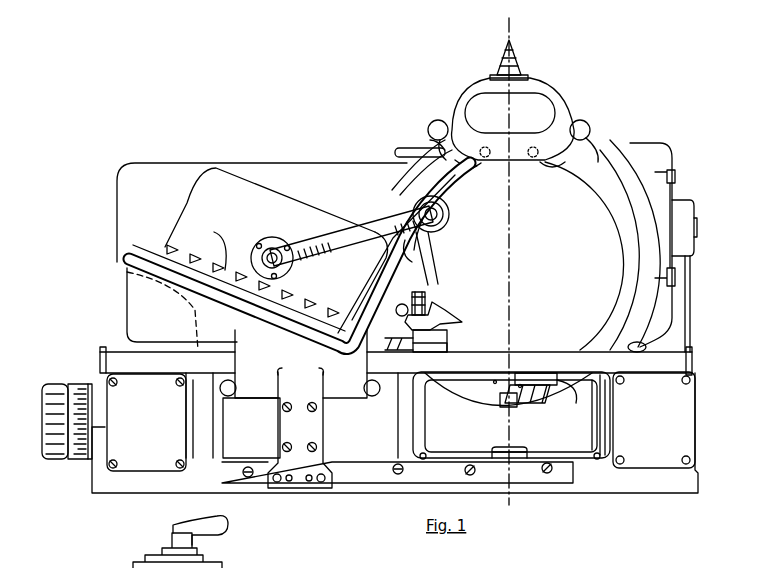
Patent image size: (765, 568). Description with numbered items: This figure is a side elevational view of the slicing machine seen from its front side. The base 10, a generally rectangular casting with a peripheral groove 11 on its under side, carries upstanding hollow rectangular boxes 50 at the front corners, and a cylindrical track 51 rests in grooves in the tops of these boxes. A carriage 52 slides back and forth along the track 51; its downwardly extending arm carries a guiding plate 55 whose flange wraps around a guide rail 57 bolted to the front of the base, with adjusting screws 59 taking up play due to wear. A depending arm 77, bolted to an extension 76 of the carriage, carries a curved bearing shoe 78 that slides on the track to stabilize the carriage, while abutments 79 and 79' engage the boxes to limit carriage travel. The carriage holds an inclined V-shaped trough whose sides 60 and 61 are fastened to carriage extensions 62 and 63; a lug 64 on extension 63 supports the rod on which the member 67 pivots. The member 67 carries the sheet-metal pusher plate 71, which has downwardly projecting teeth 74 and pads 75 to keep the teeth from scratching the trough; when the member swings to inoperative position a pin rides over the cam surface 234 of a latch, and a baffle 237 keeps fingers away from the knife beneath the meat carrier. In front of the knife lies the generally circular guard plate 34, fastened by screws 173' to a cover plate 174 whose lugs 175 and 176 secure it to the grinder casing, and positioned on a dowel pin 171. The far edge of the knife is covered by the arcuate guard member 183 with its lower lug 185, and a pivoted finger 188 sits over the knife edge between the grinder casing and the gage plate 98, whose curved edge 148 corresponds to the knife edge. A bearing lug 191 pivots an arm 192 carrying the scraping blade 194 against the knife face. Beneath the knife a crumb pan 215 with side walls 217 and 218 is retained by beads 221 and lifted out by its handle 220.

The base 10 is at (688, 488).
The peripheral groove 11 is at (509, 13).
The guard plate 34 is at (565, 192).
The hollow rectangular box 50 is at (130, 445).
The track 51 is at (684, 358).
The carriage 52 is at (258, 392).
The guiding plate 55 is at (312, 432).
The guide rail 57 is at (370, 485).
The adjusting screws 59 is at (308, 485).
The trough side 60 is at (137, 263).
The trough side 61 is at (436, 272).
The carriage extension 62 is at (237, 298).
The carriage extension 63 is at (430, 292).
The lug 64 is at (440, 232).
The pivoted member 67 is at (292, 252).
The pusher plate 71 is at (303, 213).
The downwardly projecting teeth 74 is at (211, 241).
The pads 75 is at (132, 250).
The carriage extension 76 is at (428, 300).
The depending arm 77 is at (450, 328).
The bearing shoe 78 is at (440, 356).
The abutment 79 is at (275, 373).
The abutment 79' is at (373, 398).
The gage plate 98 is at (280, 163).
The curved edge of gage plate 148 is at (382, 205).
The dowel pin 171 is at (420, 417).
The screws 173' is at (516, 173).
The cover plate 174 is at (553, 95).
The lug 175 is at (437, 120).
The lug 176 is at (590, 127).
The arcuate guard member 183 is at (645, 205).
The lug 185 is at (660, 340).
The pivoted finger 188 is at (404, 150).
The bearing lug 191 is at (541, 403).
The arm 192 is at (531, 400).
The scraping blade 194 is at (500, 400).
The crumb pan 215 is at (580, 438).
The side wall 217 is at (434, 400).
The side wall 218 is at (598, 402).
The handle 220 is at (514, 448).
The stop bead 221 is at (422, 460).
The cam surface 234 is at (450, 310).
The baffle 237 is at (128, 322).